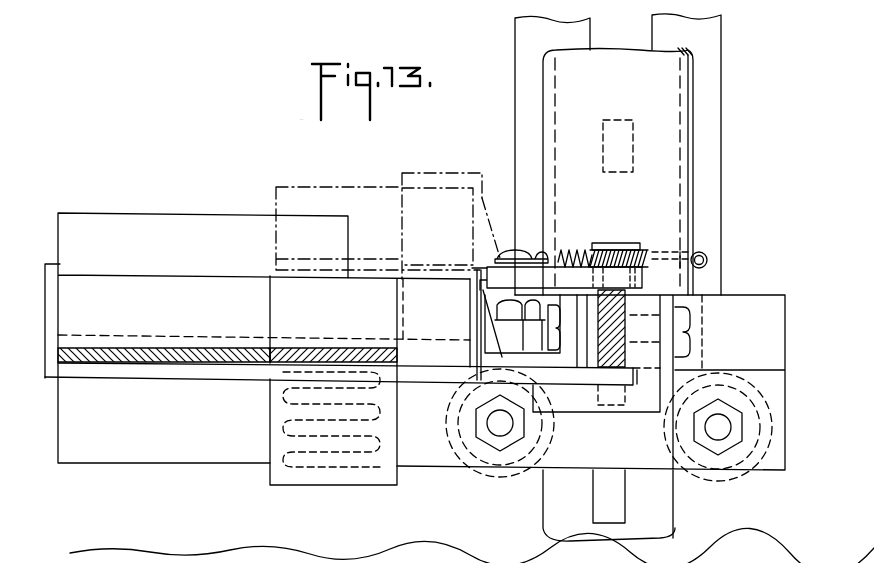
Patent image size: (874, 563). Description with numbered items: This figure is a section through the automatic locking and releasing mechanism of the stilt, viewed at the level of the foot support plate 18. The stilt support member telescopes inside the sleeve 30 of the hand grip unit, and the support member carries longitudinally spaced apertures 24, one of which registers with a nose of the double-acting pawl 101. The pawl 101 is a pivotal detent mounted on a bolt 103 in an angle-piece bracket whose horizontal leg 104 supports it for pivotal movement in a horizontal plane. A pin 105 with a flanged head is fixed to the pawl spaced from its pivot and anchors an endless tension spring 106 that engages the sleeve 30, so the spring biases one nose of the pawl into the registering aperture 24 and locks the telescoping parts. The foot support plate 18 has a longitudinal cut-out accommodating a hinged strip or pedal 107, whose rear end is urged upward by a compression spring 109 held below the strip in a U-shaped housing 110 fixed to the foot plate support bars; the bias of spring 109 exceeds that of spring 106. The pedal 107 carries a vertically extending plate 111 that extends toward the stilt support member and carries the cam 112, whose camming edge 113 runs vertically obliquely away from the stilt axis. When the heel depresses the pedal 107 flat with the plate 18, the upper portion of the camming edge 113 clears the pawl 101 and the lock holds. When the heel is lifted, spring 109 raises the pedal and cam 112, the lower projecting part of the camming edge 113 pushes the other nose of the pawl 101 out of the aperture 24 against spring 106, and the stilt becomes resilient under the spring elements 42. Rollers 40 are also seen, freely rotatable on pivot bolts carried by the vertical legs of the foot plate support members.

The foot support plate 18 is at (62, 355).
The apertures 24 is at (618, 153).
The sleeve 30 is at (680, 118).
The rollers 40 is at (495, 473).
The spring elements 42 is at (522, 44).
The pivotal detent 101 is at (646, 283).
The bolt 103 is at (515, 258).
The horizontal leg 104 is at (502, 296).
The pin 105 is at (625, 240).
The endless tension spring 106 is at (708, 252).
The strip 107 is at (325, 360).
The compression spring 109 is at (283, 420).
The U-shaped housing 110 is at (370, 478).
The plate 111 is at (438, 340).
The cam 112 is at (424, 272).
The camming edge 113 is at (500, 320).